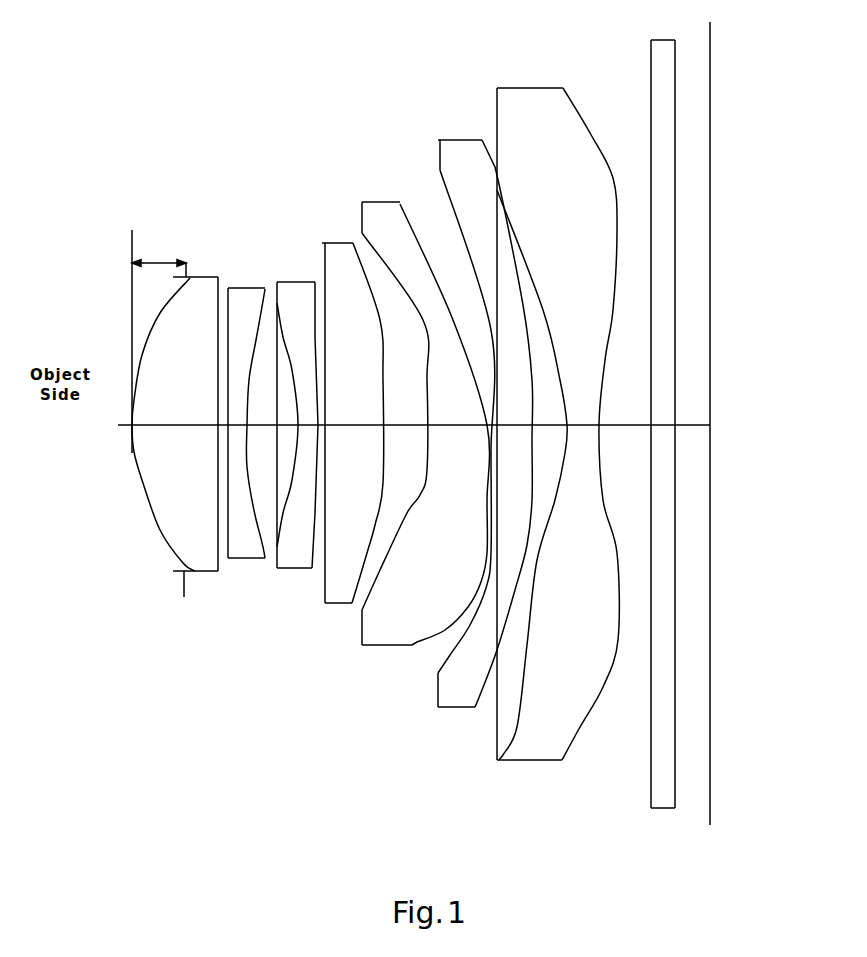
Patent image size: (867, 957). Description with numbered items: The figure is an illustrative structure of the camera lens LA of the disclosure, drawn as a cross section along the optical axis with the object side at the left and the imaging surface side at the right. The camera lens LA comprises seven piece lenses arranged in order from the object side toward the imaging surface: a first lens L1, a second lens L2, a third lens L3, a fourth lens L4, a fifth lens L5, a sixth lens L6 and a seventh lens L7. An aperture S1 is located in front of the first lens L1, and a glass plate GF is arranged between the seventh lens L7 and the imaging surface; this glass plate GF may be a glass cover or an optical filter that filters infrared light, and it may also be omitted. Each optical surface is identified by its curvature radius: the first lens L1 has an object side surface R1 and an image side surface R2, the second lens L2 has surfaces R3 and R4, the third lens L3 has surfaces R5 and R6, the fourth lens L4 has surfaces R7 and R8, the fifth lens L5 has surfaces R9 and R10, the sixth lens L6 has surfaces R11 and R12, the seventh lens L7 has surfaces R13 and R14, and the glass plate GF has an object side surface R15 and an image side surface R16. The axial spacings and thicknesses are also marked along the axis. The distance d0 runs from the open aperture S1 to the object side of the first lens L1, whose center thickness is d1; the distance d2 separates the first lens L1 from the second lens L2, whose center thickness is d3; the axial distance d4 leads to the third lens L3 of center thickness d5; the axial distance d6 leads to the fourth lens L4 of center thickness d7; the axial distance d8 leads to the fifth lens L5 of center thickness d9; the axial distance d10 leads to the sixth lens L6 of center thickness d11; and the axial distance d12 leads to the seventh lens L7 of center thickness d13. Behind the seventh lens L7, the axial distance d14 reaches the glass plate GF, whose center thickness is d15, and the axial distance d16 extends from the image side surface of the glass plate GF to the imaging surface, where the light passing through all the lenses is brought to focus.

The camera lens LA is at (171, 152).
The aperture S1 is at (186, 262).
The first lens L1 is at (143, 431).
The second lens L2 is at (200, 474).
The third lens L3 is at (268, 450).
The fourth lens L4 is at (327, 453).
The fifth lens L5 is at (407, 454).
The sixth lens L6 is at (460, 453).
The seventh lens L7 is at (543, 461).
The glass plate GF is at (620, 446).
The object side surface of the first lens R1 is at (132, 453).
The image side surface of the first lens R2 is at (218, 445).
The object side surface of the second lens R3 is at (228, 487).
The image side surface of the second lens R4 is at (247, 467).
The object side surface of the third lens R5 is at (282, 470).
The image side surface of the third lens R6 is at (312, 488).
The object side surface of the fourth lens R7 is at (325, 540).
The image side surface of the fourth lens R8 is at (368, 548).
The object side surface of the fifth lens R9 is at (405, 500).
The image side surface of the fifth lens R10 is at (460, 482).
The object side surface of the sixth lens R11 is at (488, 478).
The image side surface of the sixth lens R12 is at (475, 707).
The object side surface of the seventh lens R13 is at (610, 547).
The image side surface of the seventh lens R14 is at (548, 530).
The object side surface of the glass plate R15 is at (650, 567).
The image side surface of the glass plate R16 is at (673, 587).
The distance from the aperture to the object side of the first lens d0 is at (159, 253).
The center thickness of the first lens d1 is at (182, 413).
The distance from the first lens to the second lens d2 is at (223, 425).
The center thickness of the second lens d3 is at (232, 425).
The axial distance from the second lens to the third lens d4 is at (274, 413).
The center thickness of the third lens d5 is at (309, 405).
The axial distance from the third lens to the fourth lens d6 is at (323, 425).
The center thickness of the fourth lens d7 is at (357, 413).
The axial distance from the fourth lens to the fifth lens d8 is at (407, 413).
The center thickness of the fifth lens d9 is at (458, 413).
The axial distance from the fifth lens to the sixth lens d10 is at (487, 425).
The center thickness of the sixth lens d11 is at (514, 408).
The axial distance from the sixth lens to the seventh lens d12 is at (548, 425).
The center thickness of the seventh lens d13 is at (578, 425).
The axial distance from the seventh lens to the glass plate d14 is at (625, 414).
The center thickness of the glass plate d15 is at (670, 425).
The axial distance from the glass plate to the imaging surface d16 is at (694, 410).